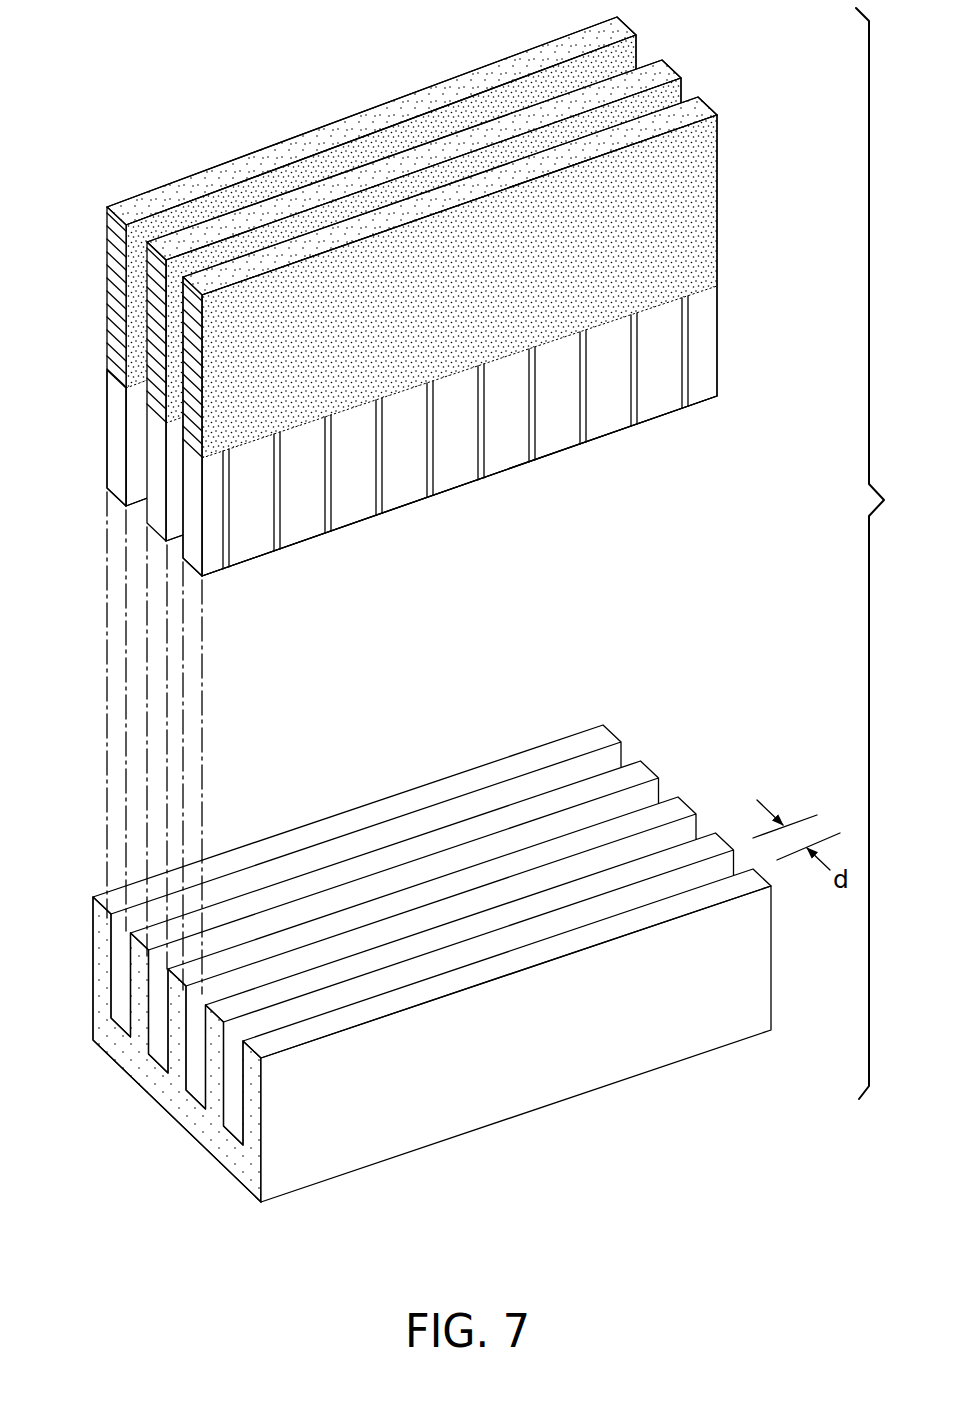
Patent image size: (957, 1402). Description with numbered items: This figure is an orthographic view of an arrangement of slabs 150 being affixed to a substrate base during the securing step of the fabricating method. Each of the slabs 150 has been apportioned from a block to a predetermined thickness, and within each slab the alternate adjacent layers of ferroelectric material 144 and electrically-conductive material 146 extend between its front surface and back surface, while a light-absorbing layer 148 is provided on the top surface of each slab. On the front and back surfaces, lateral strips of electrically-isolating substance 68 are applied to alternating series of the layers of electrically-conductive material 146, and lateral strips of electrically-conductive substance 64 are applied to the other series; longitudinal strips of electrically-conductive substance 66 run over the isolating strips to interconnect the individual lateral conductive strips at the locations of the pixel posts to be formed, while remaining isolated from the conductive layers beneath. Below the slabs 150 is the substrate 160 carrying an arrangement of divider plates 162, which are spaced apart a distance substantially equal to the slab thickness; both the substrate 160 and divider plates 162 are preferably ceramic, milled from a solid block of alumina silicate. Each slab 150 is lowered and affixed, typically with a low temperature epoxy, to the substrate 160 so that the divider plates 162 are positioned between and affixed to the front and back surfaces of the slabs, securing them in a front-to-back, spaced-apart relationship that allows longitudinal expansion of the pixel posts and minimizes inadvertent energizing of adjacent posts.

The light-absorbing layer 148 is at (171, 192).
The ferroelectric material 144 is at (113, 252).
The electrically-conductive material 146 is at (117, 306).
The slabs 150 is at (170, 568).
The electrically-isolating substance 68 is at (717, 130).
The electrically-conductive substance 64 is at (717, 192).
The longitudinal strips of electrically-conductive substance 66 is at (687, 383).
The divider plates 162 is at (632, 770).
The substrate 160 is at (242, 1160).